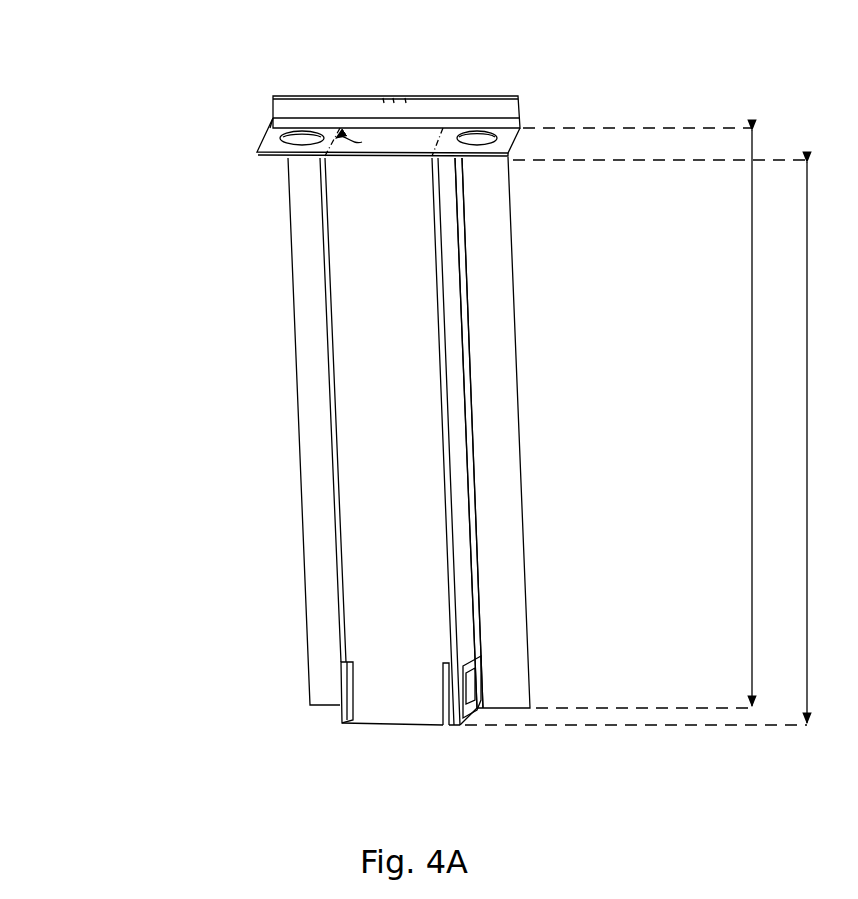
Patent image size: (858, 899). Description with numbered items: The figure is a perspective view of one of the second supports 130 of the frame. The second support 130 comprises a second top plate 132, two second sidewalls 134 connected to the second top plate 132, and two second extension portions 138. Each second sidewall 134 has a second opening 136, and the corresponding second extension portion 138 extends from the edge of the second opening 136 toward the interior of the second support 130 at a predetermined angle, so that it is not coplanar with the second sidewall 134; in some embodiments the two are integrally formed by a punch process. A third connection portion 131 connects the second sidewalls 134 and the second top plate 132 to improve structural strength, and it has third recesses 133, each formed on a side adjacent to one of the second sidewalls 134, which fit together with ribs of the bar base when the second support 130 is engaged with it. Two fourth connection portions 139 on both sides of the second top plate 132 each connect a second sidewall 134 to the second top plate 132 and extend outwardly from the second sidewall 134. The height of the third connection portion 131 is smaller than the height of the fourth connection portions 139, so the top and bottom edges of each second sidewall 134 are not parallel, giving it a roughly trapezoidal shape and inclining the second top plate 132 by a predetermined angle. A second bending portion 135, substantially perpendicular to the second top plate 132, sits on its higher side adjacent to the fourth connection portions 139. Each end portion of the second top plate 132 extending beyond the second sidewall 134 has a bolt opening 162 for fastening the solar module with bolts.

The second support 130 is at (230, 80).
The second bending portion 135 is at (313, 110).
The second top plate 132 is at (400, 130).
The bolt opening 162 is at (478, 126).
The second sidewall 134 is at (453, 275).
The fourth connection portion 139 is at (310, 373).
The third recess 133 is at (343, 668).
The second opening 136 is at (473, 657).
The second extension portion 138 is at (470, 690).
The third connection portion 131 is at (402, 692).